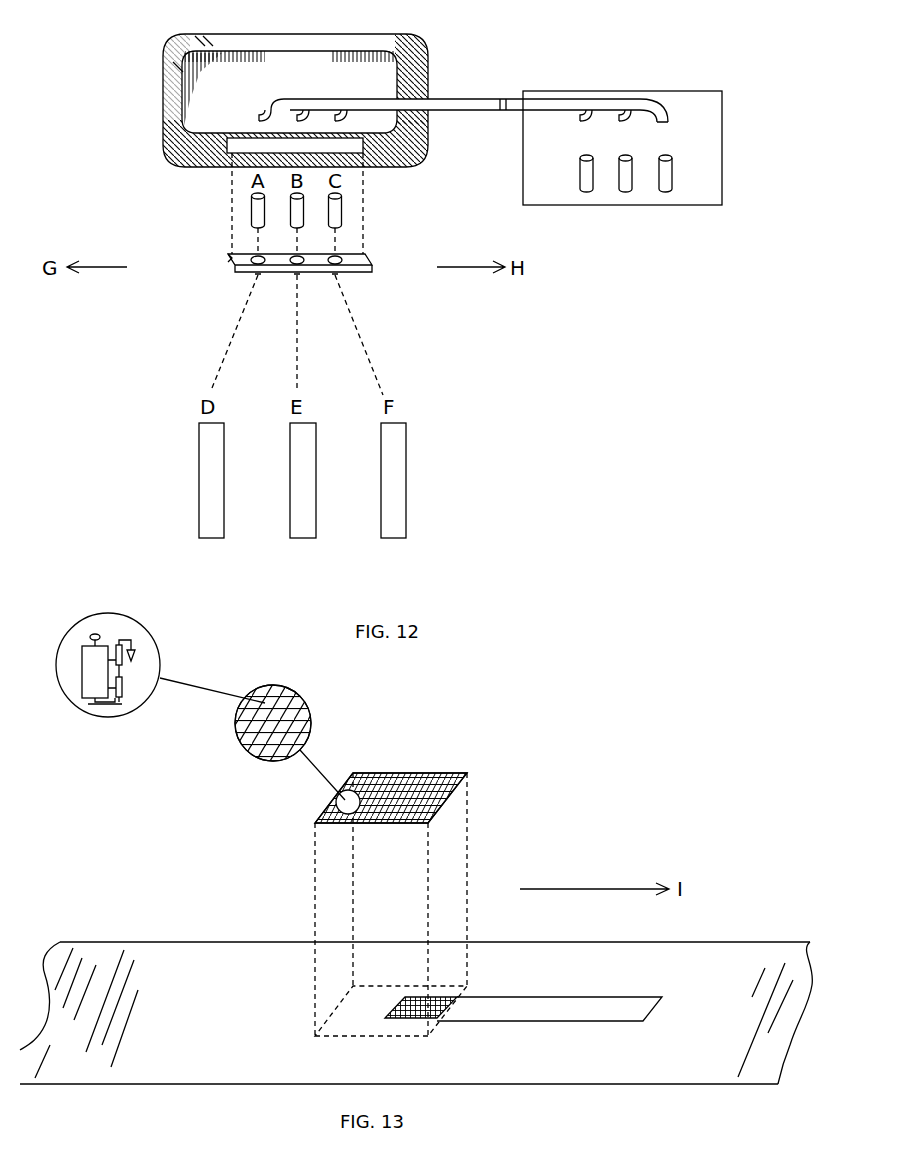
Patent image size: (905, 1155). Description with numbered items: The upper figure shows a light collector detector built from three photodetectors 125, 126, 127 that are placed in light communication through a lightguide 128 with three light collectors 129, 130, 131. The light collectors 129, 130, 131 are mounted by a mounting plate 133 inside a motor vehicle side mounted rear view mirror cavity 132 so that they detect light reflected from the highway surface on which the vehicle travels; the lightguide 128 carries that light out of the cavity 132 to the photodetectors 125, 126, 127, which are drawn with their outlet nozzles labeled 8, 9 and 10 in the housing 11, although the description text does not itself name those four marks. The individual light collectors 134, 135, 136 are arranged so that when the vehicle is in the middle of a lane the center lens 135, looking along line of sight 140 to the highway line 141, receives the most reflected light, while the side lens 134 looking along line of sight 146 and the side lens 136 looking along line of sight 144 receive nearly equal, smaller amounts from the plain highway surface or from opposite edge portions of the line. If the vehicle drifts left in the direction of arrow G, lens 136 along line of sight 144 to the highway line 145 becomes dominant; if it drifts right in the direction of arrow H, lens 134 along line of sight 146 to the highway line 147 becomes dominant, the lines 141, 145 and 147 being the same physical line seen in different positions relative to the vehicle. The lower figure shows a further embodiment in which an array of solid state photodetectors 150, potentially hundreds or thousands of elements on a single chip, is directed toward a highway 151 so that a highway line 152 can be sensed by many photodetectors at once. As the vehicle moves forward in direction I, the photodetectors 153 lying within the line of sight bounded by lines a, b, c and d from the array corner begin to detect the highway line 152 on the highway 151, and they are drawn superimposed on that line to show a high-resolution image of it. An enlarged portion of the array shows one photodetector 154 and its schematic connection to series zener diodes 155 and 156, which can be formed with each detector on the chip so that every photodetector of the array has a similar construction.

In FIG. 12, the nozzle 8 is at (586, 144).
In FIG. 12, the nozzle 9 is at (625, 144).
In FIG. 12, the nozzle 10 is at (665, 144).
In FIG. 12, the ink supply unit 11 is at (707, 103).
In FIG. 12, the photodetector 125 is at (587, 190).
In FIG. 12, the photodetector 126 is at (626, 190).
In FIG. 12, the photodetector 127 is at (665, 190).
In FIG. 12, the lightguide 128 is at (332, 100).
In FIG. 12, the light collector 129 is at (252, 202).
In FIG. 12, the light collector 130 is at (291, 221).
In FIG. 12, the light collector 131 is at (338, 210).
In FIG. 12, the side mounted rear view mirror cavity 132 is at (397, 167).
In FIG. 12, the mounting plate 133 is at (228, 256).
In FIG. 12, the side lens 134 is at (250, 278).
In FIG. 12, the center lens 135 is at (298, 282).
In FIG. 12, the side lens 136 is at (345, 278).
In FIG. 12, the line of sight 140 is at (292, 352).
In FIG. 12, the highway line 141 is at (312, 518).
In FIG. 12, the line of sight 144 is at (386, 388).
In FIG. 12, the highway line 145 is at (400, 518).
In FIG. 12, the line of sight 146 is at (215, 370).
In FIG. 12, the highway line 147 is at (218, 518).
In FIG. 13, the array of solid state photodetectors 150 is at (445, 773).
In FIG. 13, the highway 151 is at (776, 948).
In FIG. 13, the highway line 152 is at (645, 1000).
In FIG. 13, the photodetectors 153 is at (440, 1013).
In FIG. 13, the photodetector 154 is at (268, 704).
In FIG. 13, the zener diode 155 is at (130, 707).
In FIG. 13, the zener diode 156 is at (120, 648).